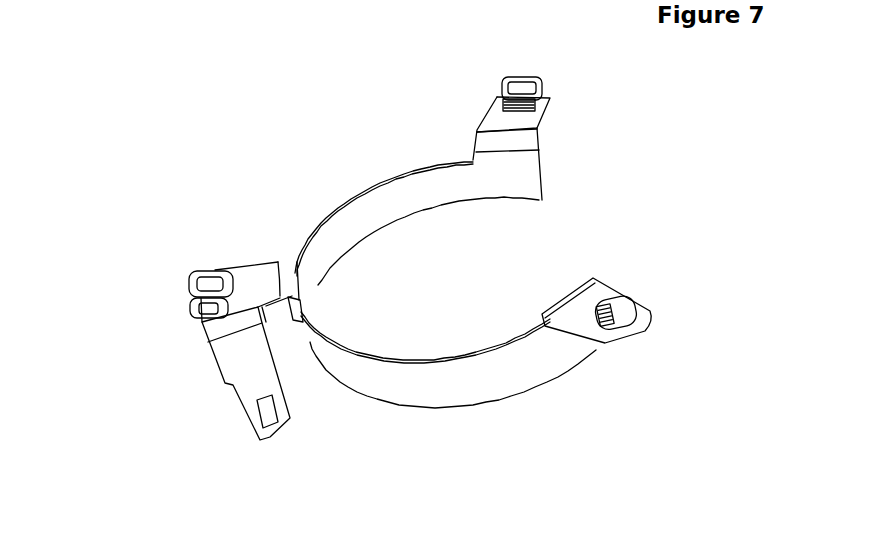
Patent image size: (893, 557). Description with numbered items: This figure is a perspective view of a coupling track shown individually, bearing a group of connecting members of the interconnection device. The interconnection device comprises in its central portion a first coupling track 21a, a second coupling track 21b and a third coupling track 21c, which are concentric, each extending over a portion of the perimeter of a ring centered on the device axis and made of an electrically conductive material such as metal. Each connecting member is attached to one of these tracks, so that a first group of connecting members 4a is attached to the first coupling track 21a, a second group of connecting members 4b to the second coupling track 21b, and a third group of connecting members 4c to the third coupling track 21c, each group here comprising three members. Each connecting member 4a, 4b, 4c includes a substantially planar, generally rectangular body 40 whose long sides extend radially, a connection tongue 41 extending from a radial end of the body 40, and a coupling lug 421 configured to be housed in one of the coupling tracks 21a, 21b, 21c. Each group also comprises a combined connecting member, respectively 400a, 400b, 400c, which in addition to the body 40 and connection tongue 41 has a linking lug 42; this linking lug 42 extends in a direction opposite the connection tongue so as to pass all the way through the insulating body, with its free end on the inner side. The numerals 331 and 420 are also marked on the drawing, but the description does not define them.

The housing 331 is at (239, 4).
The first coupling track 21a is at (395, 224).
The second coupling track 21b is at (395, 224).
The third coupling track 21c is at (336, 181).
The first group of connecting members 4a is at (604, 210).
The second group of connecting members 4b is at (604, 210).
The third group of connecting members 4c is at (629, 245).
The combined connecting member 400a is at (241, 318).
The combined connecting member 400b is at (241, 318).
The combined connecting member 400c is at (241, 318).
The body 40 is at (253, 283).
The connection tongue 41 is at (197, 278).
The linking lug 42 is at (195, 414).
The window 420 is at (266, 448).
The coupling lug 421 is at (292, 289).